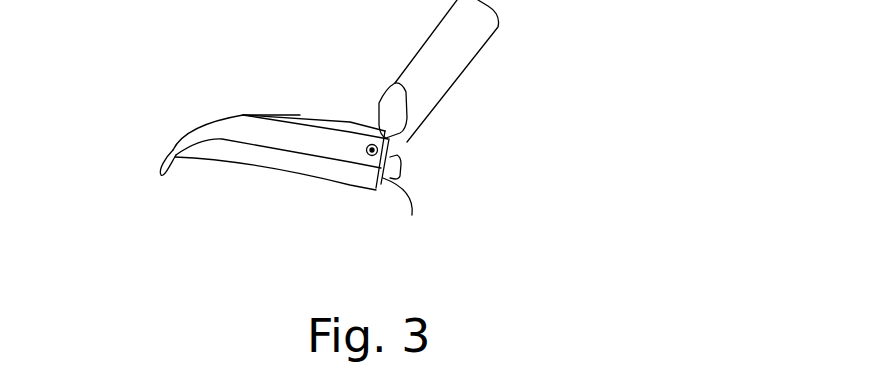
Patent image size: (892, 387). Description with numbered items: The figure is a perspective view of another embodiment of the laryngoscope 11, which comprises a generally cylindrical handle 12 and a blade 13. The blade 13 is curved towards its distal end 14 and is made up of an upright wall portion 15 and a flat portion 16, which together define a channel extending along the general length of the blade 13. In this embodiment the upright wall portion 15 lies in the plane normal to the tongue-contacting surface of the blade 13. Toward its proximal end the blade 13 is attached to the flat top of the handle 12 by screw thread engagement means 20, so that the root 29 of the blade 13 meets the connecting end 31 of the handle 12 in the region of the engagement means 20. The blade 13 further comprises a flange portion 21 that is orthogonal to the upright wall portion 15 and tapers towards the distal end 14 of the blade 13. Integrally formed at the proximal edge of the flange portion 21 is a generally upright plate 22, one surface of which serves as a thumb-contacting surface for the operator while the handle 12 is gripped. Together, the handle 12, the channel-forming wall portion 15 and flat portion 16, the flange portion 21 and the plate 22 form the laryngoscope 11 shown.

The laryngoscope 11 is at (447, 174).
The handle 12 is at (460, 50).
The blade 13 is at (214, 174).
The distal end 14 is at (167, 152).
The upright wall portion 15 is at (257, 133).
The flat portion 16 is at (317, 167).
The screw thread engagement means 20 is at (369, 155).
The flange portion 21 is at (322, 118).
The upright plate 22 is at (407, 108).
The root of the blade 29 is at (409, 212).
The connecting end of the handle 31 is at (401, 162).